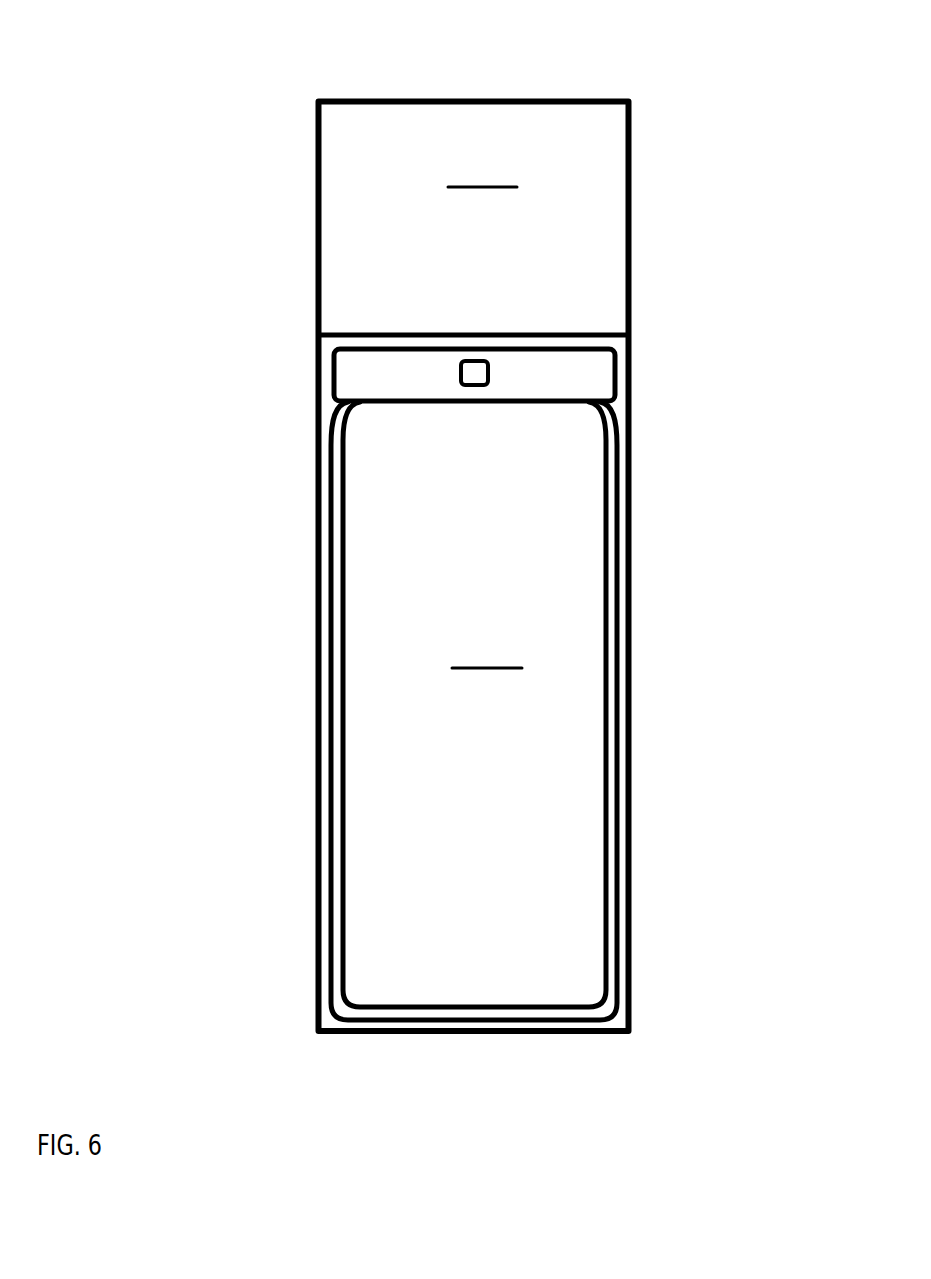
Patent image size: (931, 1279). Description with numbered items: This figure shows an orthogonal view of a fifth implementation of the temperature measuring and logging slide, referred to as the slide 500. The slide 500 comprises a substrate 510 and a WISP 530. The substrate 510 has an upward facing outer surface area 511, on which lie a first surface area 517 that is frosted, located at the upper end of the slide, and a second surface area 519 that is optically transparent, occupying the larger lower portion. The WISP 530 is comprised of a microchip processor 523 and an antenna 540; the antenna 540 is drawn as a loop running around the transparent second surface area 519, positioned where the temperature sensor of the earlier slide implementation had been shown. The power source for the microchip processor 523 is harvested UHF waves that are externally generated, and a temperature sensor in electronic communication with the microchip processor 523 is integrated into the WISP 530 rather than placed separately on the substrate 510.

The slide 500 is at (213, 120).
The substrate 510 is at (317, 288).
The upward facing outer surface area 511 is at (485, 406).
The first surface area 517 is at (595, 287).
The second surface area 519 is at (592, 665).
The microchip processor 523 is at (478, 372).
The WISP 530 is at (327, 362).
The antenna 540 is at (322, 448).